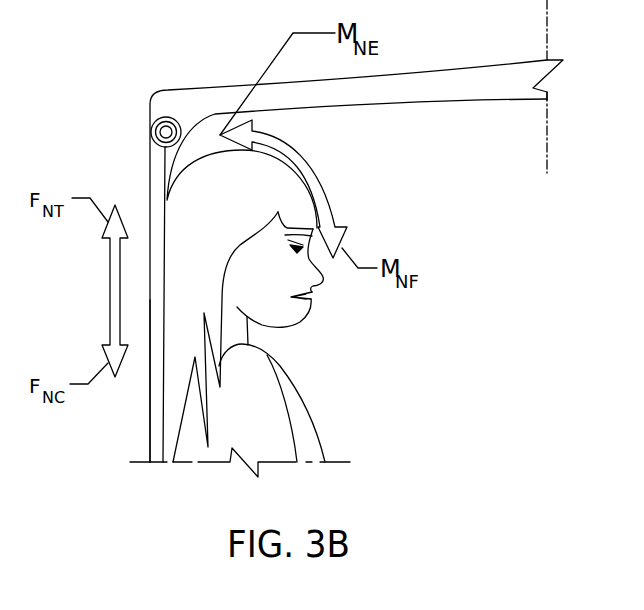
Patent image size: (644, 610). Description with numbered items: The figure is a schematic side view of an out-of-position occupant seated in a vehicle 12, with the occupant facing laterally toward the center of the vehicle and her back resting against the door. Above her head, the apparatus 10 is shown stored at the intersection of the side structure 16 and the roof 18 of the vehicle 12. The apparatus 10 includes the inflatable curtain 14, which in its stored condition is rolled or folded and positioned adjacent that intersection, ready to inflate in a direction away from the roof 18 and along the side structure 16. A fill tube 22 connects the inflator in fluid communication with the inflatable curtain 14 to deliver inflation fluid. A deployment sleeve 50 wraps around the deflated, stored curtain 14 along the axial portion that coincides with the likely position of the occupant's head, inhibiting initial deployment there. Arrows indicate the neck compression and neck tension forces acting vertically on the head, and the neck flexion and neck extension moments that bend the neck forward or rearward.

The apparatus 10 is at (150, 62).
The vehicle 12 is at (408, 57).
The inflatable curtain 14 is at (155, 118).
The side structure 16 is at (155, 418).
The roof 18 is at (240, 93).
The fill tube 22 is at (157, 133).
The deployment sleeve 50 is at (155, 148).